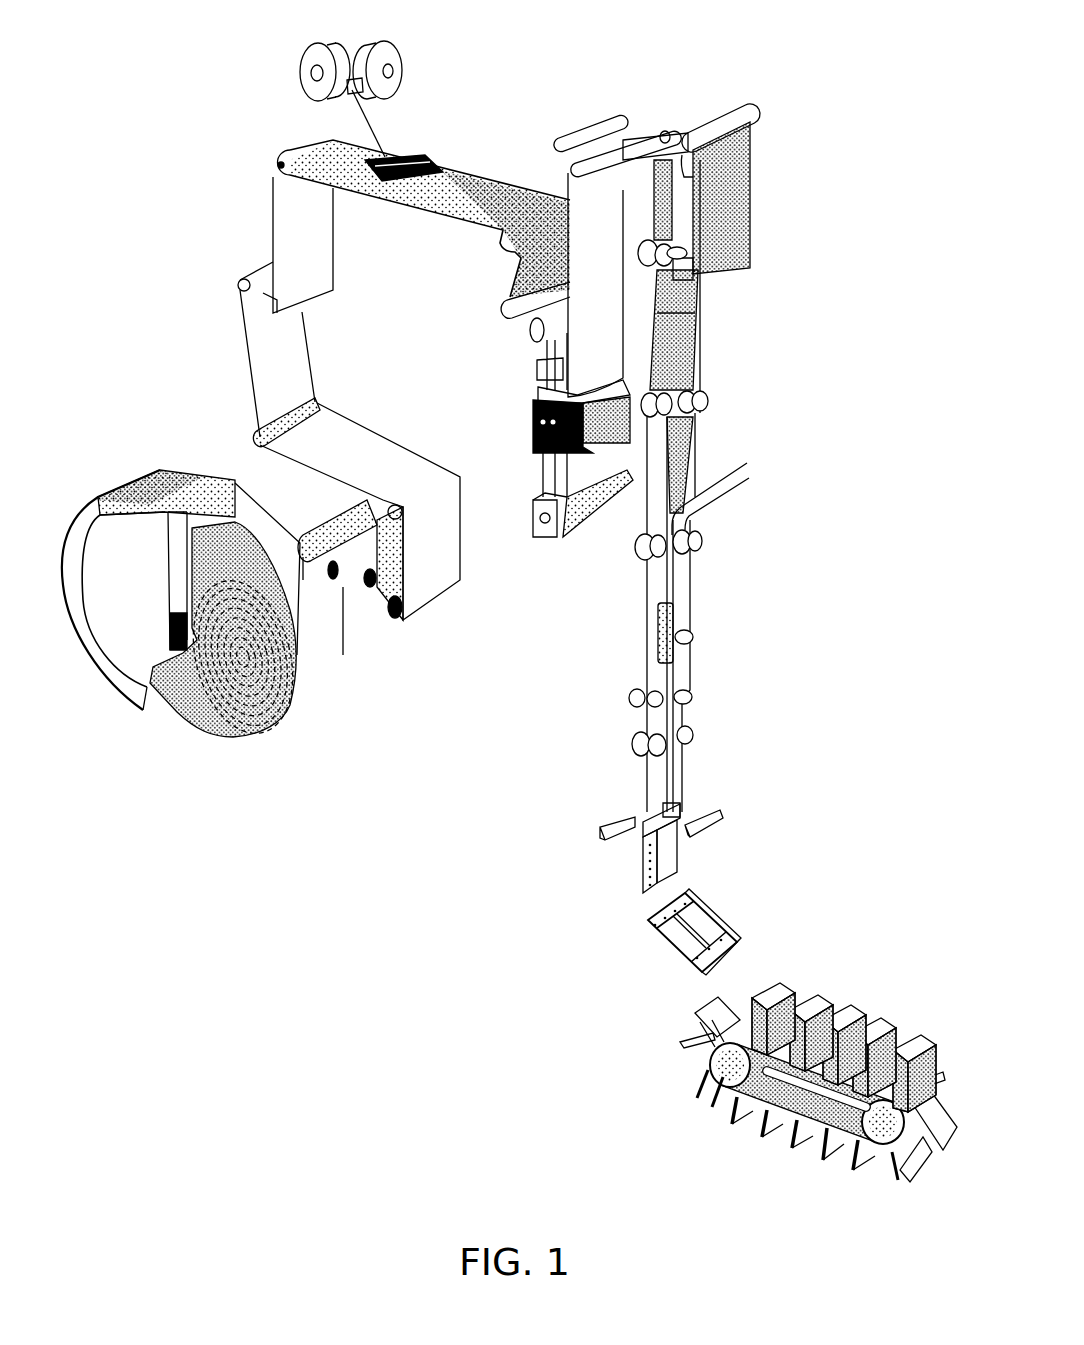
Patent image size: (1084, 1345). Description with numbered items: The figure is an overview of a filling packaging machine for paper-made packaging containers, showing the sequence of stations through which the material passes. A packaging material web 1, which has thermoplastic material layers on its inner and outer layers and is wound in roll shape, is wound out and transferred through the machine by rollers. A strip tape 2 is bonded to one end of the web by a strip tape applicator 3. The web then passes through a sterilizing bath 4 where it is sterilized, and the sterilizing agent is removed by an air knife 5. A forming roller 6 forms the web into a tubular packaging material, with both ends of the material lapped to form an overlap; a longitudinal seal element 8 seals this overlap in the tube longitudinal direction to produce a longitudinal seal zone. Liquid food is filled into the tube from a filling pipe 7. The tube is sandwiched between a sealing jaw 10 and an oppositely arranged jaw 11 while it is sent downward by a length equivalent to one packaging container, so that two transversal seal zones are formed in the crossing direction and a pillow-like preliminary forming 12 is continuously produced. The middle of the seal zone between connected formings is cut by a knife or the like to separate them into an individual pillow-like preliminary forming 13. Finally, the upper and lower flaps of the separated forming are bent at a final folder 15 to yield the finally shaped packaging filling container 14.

The packaging material web 1 is at (232, 673).
The strip tape 2 is at (352, 88).
The strip tape applicator 3 is at (403, 157).
The sterilizing bath 4 is at (557, 540).
The air knife 5 is at (665, 133).
The forming roller 6 is at (703, 393).
The filling pipe 7 is at (742, 468).
The longitudinal seal element 8 is at (680, 613).
The sealing jaw 10 is at (725, 810).
The oppositely arranged jaw 11 is at (610, 817).
The pillow-like preliminary forming 12 is at (638, 857).
The individual pillow-like preliminary forming 13 is at (683, 932).
The packaging filling container 14 is at (913, 1033).
The final folder 15 is at (700, 1038).